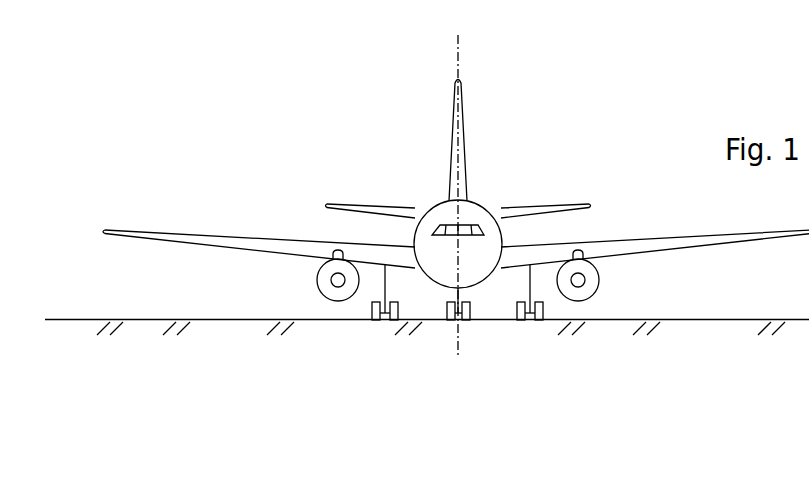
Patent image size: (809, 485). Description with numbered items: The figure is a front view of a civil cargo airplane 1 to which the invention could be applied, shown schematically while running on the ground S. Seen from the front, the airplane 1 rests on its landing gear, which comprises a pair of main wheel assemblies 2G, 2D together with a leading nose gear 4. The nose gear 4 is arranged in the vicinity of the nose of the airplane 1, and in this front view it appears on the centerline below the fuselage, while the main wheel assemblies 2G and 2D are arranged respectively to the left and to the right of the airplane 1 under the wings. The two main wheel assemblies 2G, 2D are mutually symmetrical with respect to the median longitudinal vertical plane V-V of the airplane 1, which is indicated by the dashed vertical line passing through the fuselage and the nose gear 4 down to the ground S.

The airplane 1 is at (456, 275).
The main wheel assembly 2D is at (378, 329).
The main wheel assembly 2G is at (538, 329).
The leading nose gear 4 is at (449, 329).
The ground S is at (143, 320).
The median longitudinal vertical plane V is at (468, 195).